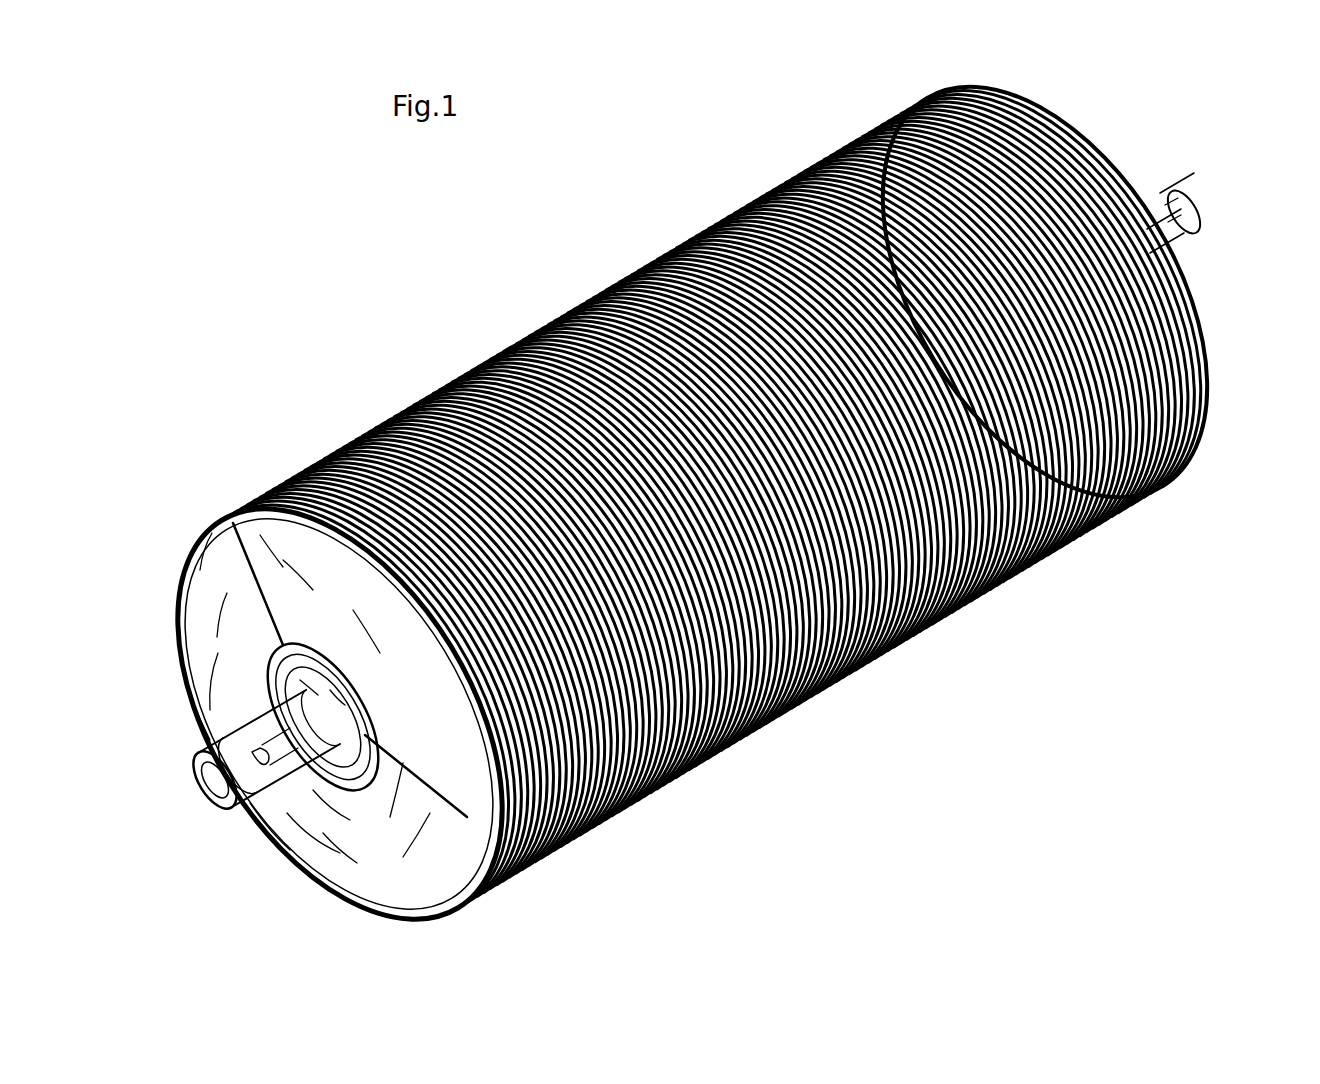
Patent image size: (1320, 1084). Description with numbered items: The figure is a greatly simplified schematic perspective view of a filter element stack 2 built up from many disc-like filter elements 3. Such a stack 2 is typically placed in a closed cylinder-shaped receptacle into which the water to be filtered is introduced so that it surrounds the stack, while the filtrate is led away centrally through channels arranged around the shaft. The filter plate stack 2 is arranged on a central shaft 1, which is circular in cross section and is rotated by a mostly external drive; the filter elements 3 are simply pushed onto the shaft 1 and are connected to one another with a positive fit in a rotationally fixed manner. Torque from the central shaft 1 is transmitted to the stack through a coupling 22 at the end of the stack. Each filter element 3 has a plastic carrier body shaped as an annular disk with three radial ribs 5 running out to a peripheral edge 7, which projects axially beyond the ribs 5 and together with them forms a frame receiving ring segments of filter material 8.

The central shaft 1 is at (1203, 222).
The filter element stack 2 is at (692, 503).
The filter element 3 is at (590, 300).
The radial rib 5 is at (385, 747).
The peripheral edge 7 is at (332, 882).
The filter material 8 is at (431, 845).
The coupling 22 is at (318, 662).